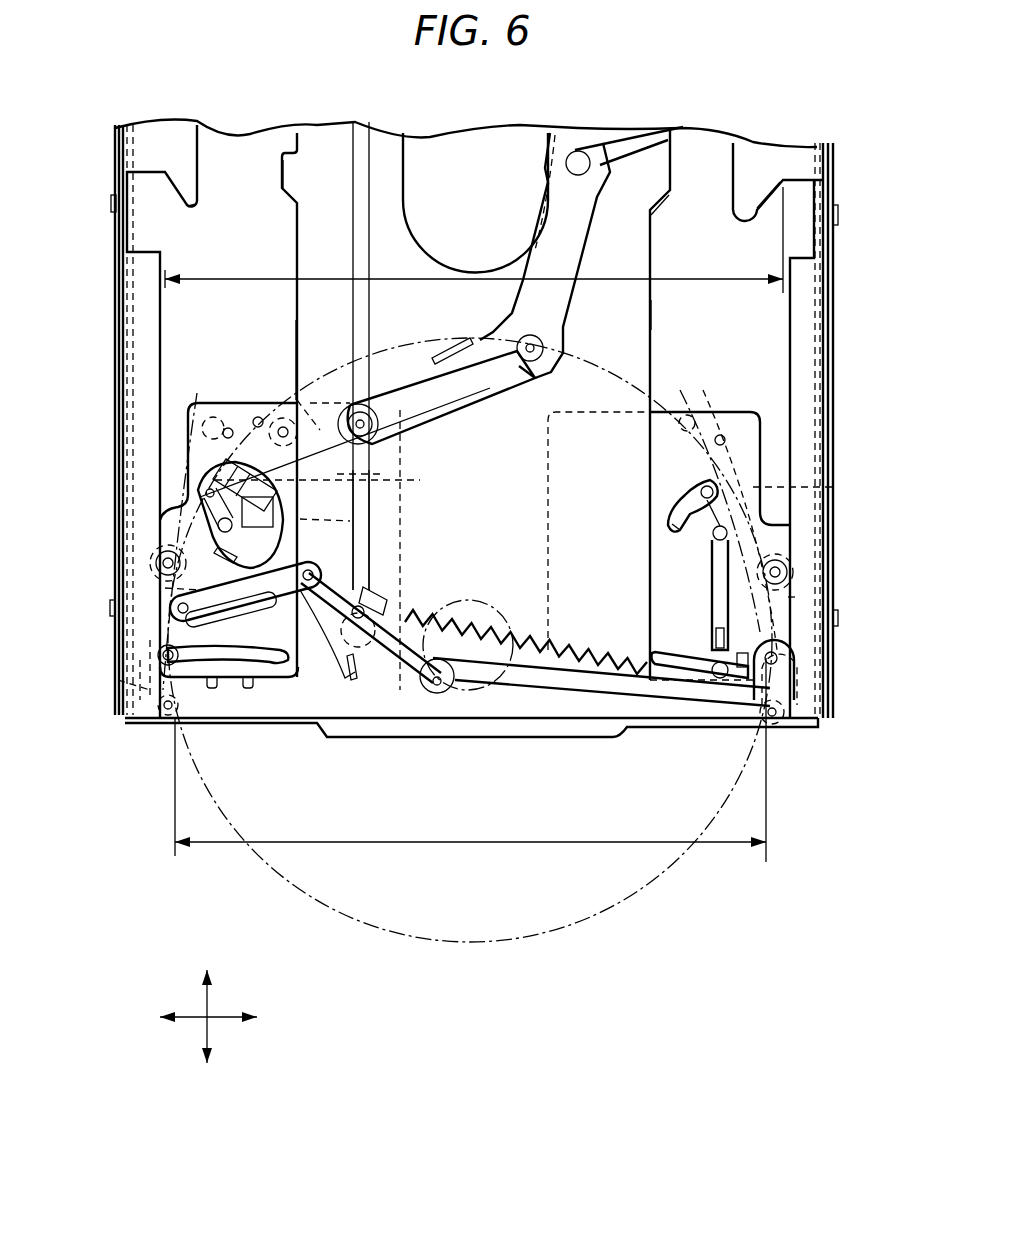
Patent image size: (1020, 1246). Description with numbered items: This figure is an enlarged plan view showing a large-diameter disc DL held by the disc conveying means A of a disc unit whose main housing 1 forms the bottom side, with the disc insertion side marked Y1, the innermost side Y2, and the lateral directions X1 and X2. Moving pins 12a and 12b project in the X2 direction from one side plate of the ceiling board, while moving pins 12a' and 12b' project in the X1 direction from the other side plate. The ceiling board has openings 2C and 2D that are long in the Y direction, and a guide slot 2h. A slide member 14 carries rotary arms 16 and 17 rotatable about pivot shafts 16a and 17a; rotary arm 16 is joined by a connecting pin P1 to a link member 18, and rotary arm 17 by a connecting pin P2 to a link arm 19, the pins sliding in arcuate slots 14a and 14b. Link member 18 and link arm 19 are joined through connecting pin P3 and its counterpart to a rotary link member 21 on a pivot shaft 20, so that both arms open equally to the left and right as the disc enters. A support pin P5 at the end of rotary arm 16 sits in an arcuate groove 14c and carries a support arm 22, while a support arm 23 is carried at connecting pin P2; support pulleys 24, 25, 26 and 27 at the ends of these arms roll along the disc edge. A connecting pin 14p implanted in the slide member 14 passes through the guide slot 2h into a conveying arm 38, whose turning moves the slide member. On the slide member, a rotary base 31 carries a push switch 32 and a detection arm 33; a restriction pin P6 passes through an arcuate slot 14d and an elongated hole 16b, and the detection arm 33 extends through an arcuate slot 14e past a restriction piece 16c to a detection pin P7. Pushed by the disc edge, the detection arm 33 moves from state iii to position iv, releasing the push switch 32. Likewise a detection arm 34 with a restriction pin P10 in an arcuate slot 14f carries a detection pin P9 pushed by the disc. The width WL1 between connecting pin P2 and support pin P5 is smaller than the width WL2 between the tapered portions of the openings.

The main housing 1 is at (118, 365).
The guide slot 2h is at (355, 305).
The opening 2C is at (297, 318).
The opening 2D is at (652, 312).
The moving pin 12b' is at (94, 420).
The moving pin 12b is at (860, 430).
The moving pin 12a' is at (81, 612).
The moving pin 12a is at (867, 626).
The width between tapered portions WL2 is at (474, 247).
The width between connecting pin and support pin WL1 is at (470, 760).
The large-diameter disc DL is at (672, 875).
The conveying arm 38 is at (560, 316).
The connecting pin 14p is at (367, 393).
The connecting pin P3 is at (310, 575).
The arcuate slot 14e is at (352, 520).
The slide member 14 is at (548, 452).
The arcuate slot 14d is at (300, 519).
The restriction piece 16c is at (383, 474).
The restriction pin P6 is at (195, 480).
The push switch 32 is at (285, 507).
The detection arm 33 is at (272, 454).
The rotary base 31 is at (267, 547).
The detection pin P7 is at (283, 410).
The pivot shaft 16a is at (227, 425).
The elongated hole 16b is at (205, 395).
The position of detection arm iv is at (257, 418).
The state of detection arm iii is at (318, 430).
The conveying means A is at (233, 350).
The link member 18 is at (292, 590).
The connecting pin P1 is at (196, 612).
The arcuate slot 14a is at (250, 608).
The support pin P5 is at (165, 657).
The arcuate groove 14c is at (278, 662).
The rotary link member 21 is at (377, 660).
The pivot shaft 20 is at (390, 610).
The link arm 19 is at (583, 683).
The detection arm 34 is at (680, 492).
The restriction pin P10 is at (695, 505).
The arcuate slot 14f is at (675, 522).
The rotary arm 17 is at (790, 487).
The pivot shaft 17a is at (722, 432).
The detection pin P9 is at (687, 418).
The arcuate slot 14b is at (687, 657).
The support pulley 27 is at (793, 572).
The support pulley 25 is at (160, 562).
The support arm 22 is at (165, 588).
The support arm 23 is at (795, 597).
The connecting pin P2 is at (775, 658).
The support pulley 26 is at (790, 720).
The support pulley 24 is at (163, 718).
The rotary arm 16 is at (118, 680).
The direction X1 is at (192, 1017).
The direction X2 is at (266, 1017).
The direction Y1 is at (206, 1073).
The direction Y2 is at (206, 1002).